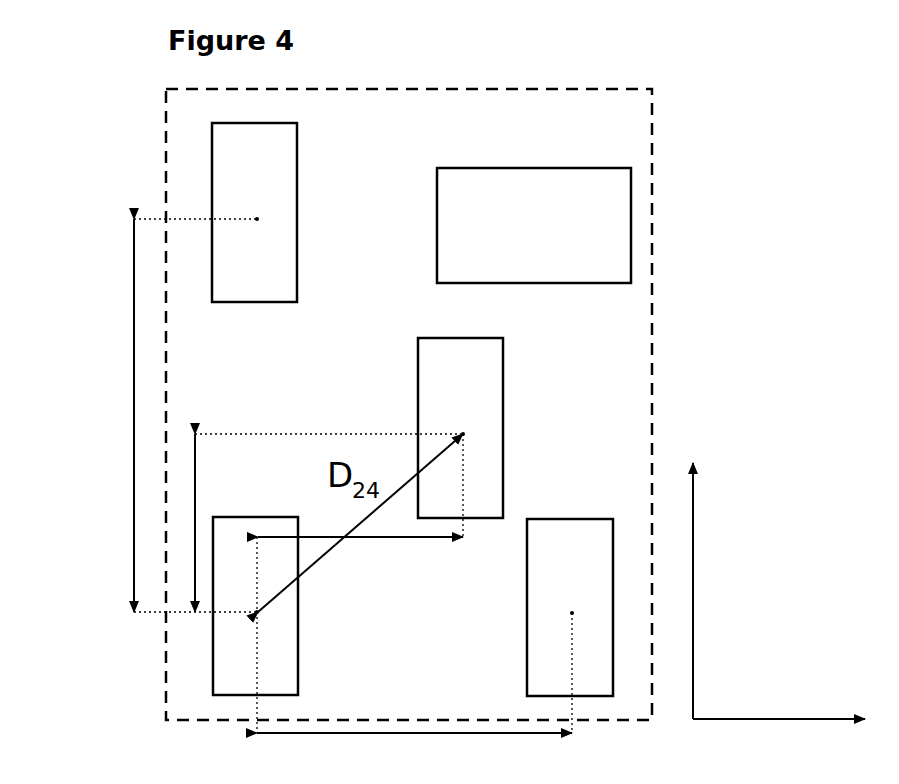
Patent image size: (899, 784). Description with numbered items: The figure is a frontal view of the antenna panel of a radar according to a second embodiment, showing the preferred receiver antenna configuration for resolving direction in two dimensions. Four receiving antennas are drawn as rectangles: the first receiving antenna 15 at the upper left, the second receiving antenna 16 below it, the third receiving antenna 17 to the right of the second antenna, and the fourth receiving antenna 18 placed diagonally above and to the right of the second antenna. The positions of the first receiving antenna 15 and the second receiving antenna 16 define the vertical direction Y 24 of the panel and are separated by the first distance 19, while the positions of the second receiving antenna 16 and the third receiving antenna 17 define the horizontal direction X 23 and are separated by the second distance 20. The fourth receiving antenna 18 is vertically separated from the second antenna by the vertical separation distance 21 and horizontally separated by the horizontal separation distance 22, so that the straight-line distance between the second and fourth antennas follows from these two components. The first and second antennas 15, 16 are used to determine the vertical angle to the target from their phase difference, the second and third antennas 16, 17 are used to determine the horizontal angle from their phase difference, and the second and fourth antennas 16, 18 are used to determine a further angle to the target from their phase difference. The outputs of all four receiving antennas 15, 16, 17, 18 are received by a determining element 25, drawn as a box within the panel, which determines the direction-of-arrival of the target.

The receiving antenna RX1 15 is at (265, 122).
The receiving antenna RX2 16 is at (298, 660).
The receiving antenna RX3 17 is at (568, 518).
The receiving antenna RX4 18 is at (503, 408).
The distance D12 19 is at (134, 325).
The distance D23 20 is at (388, 732).
The distance D24_1 21 is at (197, 462).
The distance D24_3 22 is at (432, 537).
The horizontal direction X 23 is at (762, 718).
The vertical direction Y 24 is at (693, 578).
The determining element 25 is at (497, 167).